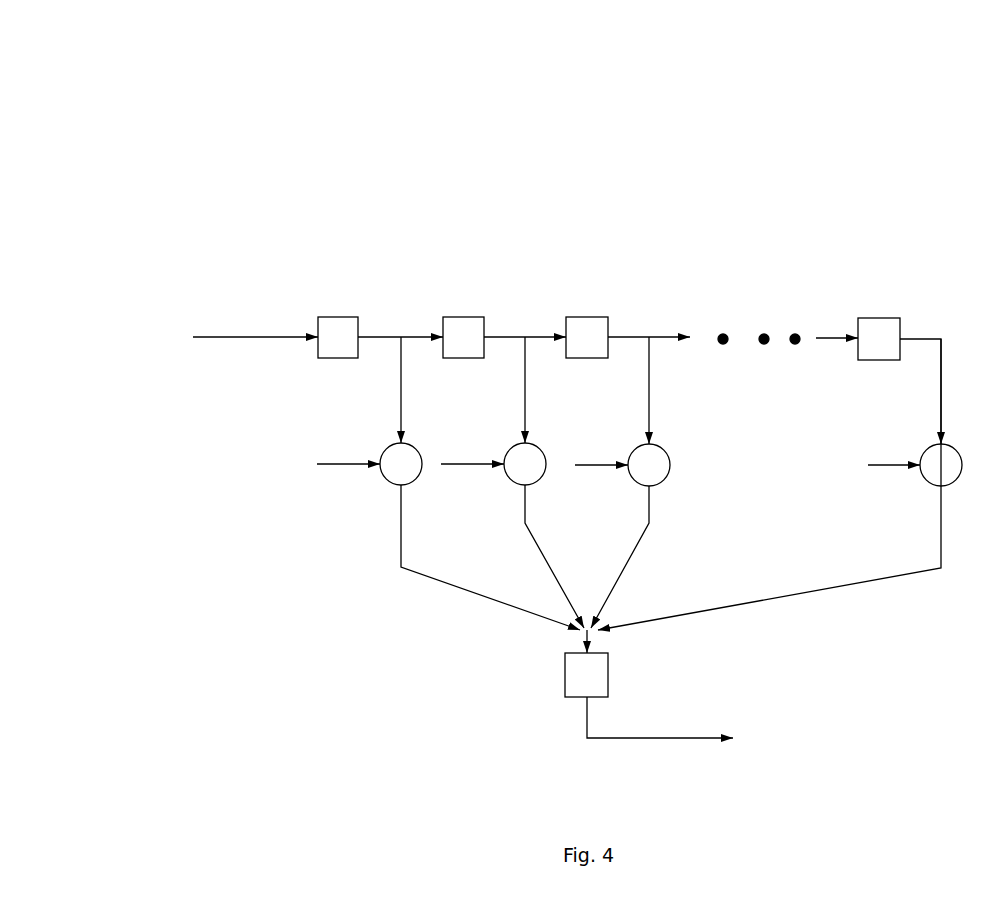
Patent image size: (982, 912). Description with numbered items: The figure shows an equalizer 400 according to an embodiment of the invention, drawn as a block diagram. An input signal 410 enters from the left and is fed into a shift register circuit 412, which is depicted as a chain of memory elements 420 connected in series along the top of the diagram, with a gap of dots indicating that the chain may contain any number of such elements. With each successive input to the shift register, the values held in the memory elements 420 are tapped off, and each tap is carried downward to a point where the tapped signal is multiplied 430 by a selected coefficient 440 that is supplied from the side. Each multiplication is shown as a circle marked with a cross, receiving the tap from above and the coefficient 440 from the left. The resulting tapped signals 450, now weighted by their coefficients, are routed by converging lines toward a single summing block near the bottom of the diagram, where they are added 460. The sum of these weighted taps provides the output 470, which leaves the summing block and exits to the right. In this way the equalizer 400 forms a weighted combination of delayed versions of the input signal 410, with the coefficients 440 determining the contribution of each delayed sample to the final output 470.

The equalizer 400 is at (68, 73).
The input signal 410 is at (132, 305).
The shift register circuit 412 is at (524, 243).
The memory elements 420 is at (348, 315).
The multiplication (multiplier) 430 is at (382, 473).
The coefficients 440 is at (328, 432).
The tapped signals 450 is at (567, 633).
The addition (adder) 460 is at (608, 675).
The output 470 is at (785, 718).